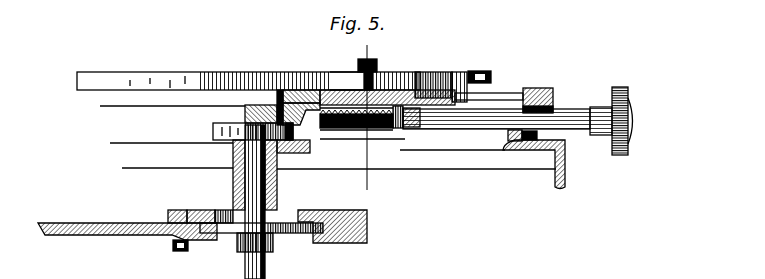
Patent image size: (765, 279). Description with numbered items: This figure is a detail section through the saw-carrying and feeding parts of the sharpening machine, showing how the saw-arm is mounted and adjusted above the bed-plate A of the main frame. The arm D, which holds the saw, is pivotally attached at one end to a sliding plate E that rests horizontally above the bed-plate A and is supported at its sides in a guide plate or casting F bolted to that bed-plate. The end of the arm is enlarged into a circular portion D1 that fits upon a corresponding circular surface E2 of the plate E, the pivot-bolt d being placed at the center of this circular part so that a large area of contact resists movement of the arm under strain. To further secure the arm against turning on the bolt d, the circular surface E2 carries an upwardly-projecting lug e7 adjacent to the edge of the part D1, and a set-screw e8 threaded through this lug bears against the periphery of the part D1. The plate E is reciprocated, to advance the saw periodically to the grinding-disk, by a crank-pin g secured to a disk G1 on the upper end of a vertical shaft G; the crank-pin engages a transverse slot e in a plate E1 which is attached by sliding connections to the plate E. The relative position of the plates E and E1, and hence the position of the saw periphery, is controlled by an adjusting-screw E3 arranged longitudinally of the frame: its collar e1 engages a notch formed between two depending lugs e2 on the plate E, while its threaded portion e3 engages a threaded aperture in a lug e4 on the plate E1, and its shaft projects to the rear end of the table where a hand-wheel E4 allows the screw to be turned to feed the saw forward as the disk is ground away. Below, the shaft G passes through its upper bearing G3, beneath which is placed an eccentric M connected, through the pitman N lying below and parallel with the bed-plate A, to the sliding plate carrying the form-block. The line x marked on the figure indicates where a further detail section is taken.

The arm D is at (248, 74).
The enlarged circular portion of arm D D1 is at (336, 80).
The pivot-bolt d is at (377, 66).
The section line x x is at (373, 116).
The sliding plate E is at (347, 100).
The plate E' E1 is at (306, 116).
The circular surface of plate E E2 is at (300, 93).
The adjusting-screw E3 is at (578, 110).
The hand-wheel E4 is at (628, 148).
The transverse slot e is at (255, 106).
The collar e1 is at (400, 132).
The depending lugs e2 is at (436, 92).
The threaded portion e3 is at (348, 130).
The lug e4 is at (380, 130).
The lug e7 is at (485, 100).
The set-screw e8 is at (490, 78).
The crank-pin g is at (246, 113).
The vertical shaft G is at (265, 258).
The disk G1 is at (213, 131).
The upper bearing G3 is at (233, 186).
The bed-plate A is at (290, 186).
The guide plate F is at (512, 160).
The pitman N is at (127, 238).
The eccentric M is at (228, 233).